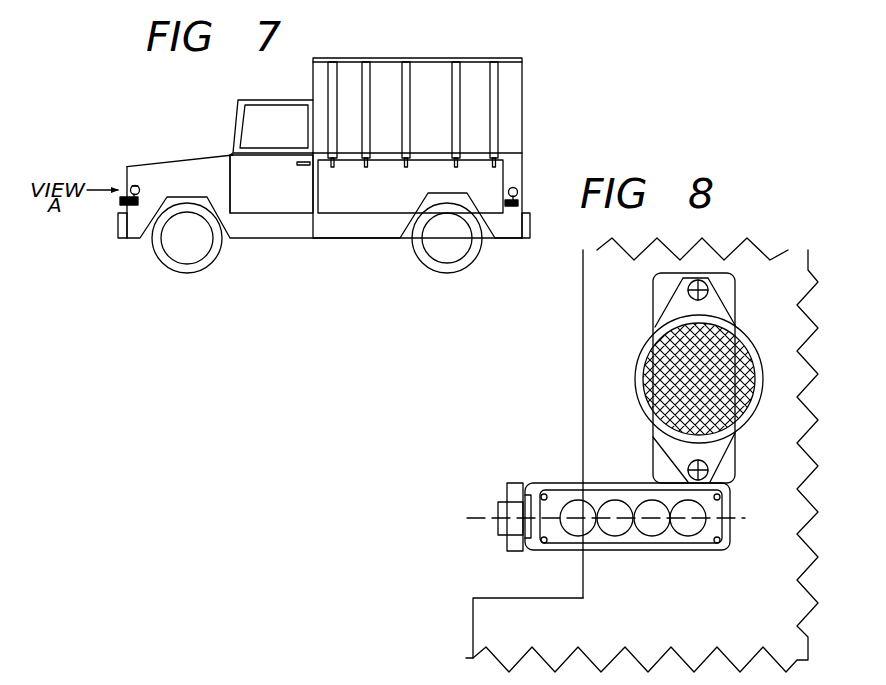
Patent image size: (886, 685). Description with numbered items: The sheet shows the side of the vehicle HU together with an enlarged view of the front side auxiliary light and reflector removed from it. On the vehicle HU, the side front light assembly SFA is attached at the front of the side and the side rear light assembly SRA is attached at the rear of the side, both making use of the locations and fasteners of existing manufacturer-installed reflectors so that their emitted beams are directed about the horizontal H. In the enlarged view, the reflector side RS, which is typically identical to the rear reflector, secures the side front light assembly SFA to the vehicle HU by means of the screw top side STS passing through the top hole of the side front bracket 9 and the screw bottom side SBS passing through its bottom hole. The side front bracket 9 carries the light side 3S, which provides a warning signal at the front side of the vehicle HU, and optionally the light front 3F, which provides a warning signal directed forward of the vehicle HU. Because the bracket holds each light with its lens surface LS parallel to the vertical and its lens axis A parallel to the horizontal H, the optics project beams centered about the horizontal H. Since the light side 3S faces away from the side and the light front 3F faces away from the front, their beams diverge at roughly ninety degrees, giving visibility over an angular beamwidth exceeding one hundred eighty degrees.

In FIG. 7, the vehicle HU is at (168, 168).
In FIG. 8, the vehicle HU is at (612, 315).
In FIG. 7, the side front light assembly SFA is at (130, 184).
In FIG. 8, the side front light assembly SFA is at (658, 450).
In FIG. 7, the side rear light assembly SRA is at (513, 187).
In FIG. 7, the reflector side RS is at (389, 139).
In FIG. 8, the reflector side RS is at (722, 312).
In FIG. 8, the screw top side STS is at (701, 286).
In FIG. 8, the screw bottom side SBS is at (704, 466).
In FIG. 8, the side front bracket 9 is at (660, 467).
In FIG. 8, the horizontal H is at (743, 518).
In FIG. 8, the lens surface LS is at (667, 537).
In FIG. 8, the lens axis A is at (633, 518).
In FIG. 8, the light side 3S is at (548, 522).
In FIG. 8, the light front 3F is at (513, 542).